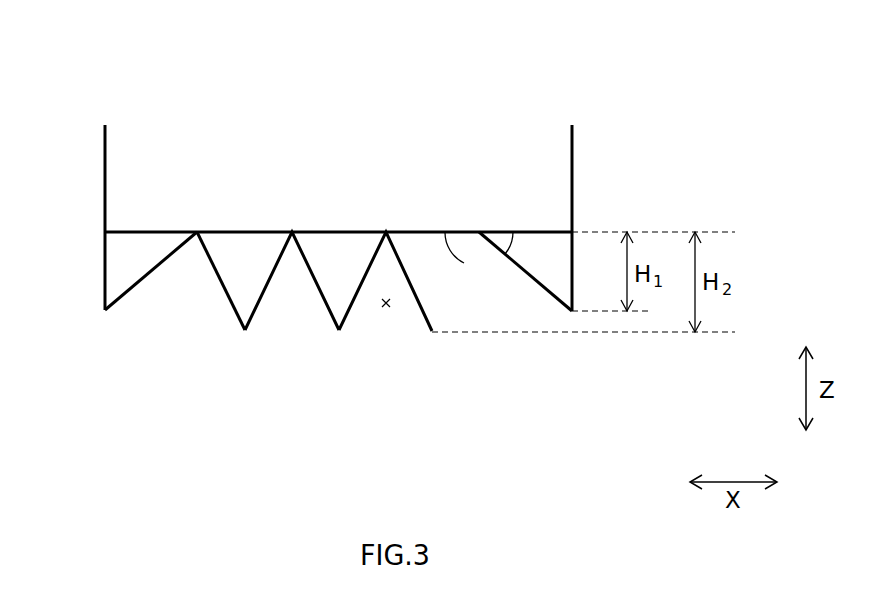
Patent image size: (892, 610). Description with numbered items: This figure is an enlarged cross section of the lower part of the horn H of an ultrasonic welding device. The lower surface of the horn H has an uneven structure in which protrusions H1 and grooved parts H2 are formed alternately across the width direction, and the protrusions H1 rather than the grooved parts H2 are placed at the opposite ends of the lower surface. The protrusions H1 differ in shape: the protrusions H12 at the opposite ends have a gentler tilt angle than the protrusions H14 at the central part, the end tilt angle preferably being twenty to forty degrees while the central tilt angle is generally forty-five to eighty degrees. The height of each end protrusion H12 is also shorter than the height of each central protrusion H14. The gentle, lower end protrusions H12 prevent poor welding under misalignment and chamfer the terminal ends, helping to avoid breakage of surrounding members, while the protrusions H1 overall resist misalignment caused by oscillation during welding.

The horn H is at (53, 50).
The protrusion H1 is at (240, 387).
The protrusion at the opposite ends H12 is at (123, 282).
The protrusion at the central part H14 is at (225, 283).
The grooved part H2 is at (387, 307).